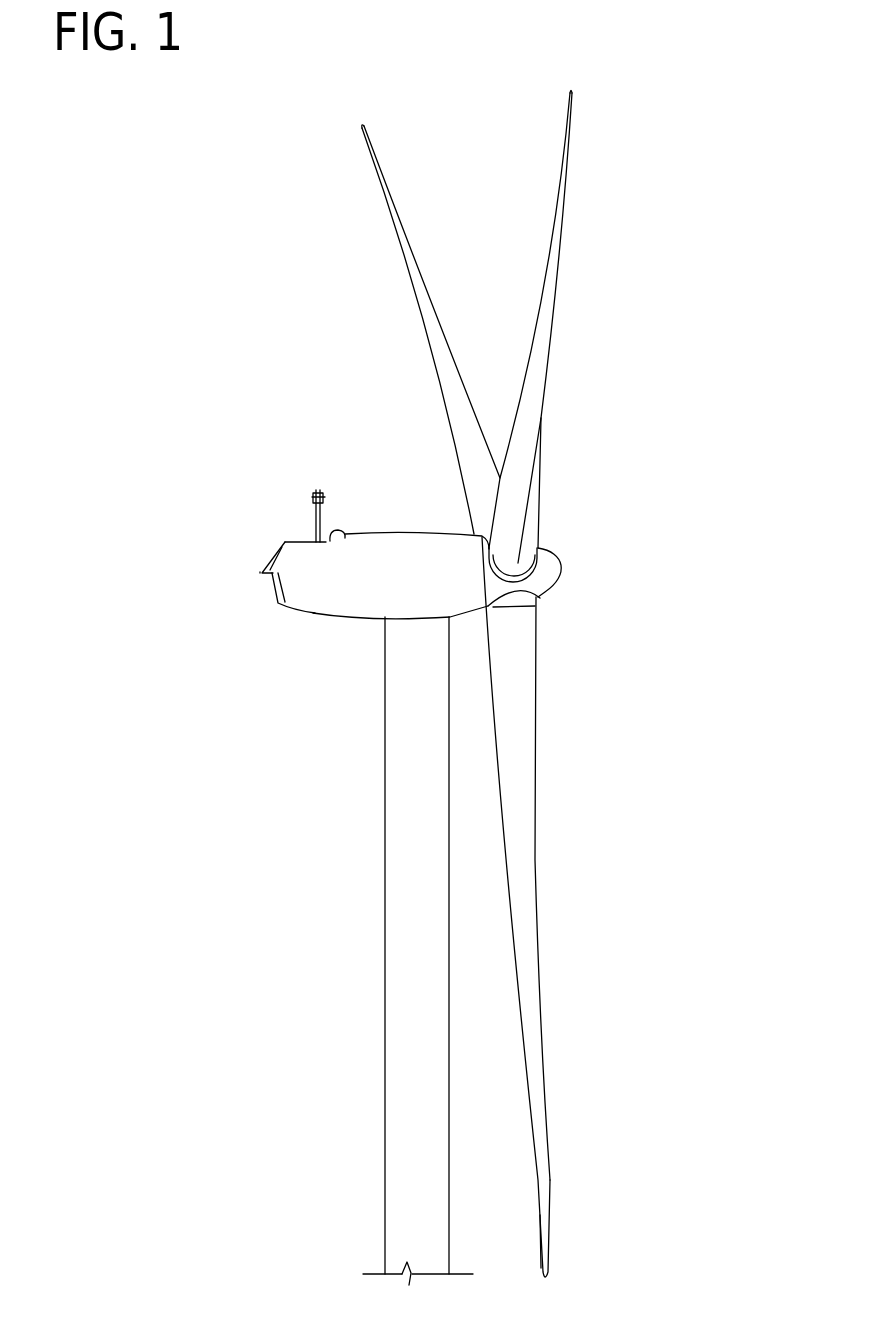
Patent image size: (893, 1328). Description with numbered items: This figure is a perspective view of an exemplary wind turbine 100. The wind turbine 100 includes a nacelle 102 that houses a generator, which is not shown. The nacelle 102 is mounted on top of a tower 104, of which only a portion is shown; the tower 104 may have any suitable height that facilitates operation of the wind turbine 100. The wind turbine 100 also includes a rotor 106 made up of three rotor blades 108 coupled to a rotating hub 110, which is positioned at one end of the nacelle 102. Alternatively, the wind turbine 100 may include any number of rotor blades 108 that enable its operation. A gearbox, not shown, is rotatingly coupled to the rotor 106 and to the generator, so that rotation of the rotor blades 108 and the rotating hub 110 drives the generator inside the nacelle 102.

The wind turbine 100 is at (240, 166).
The nacelle 102 is at (305, 622).
The tower 104 is at (384, 897).
The rotor 106 is at (628, 305).
The rotor blades 108 is at (401, 213).
The rotating hub 110 is at (557, 588).